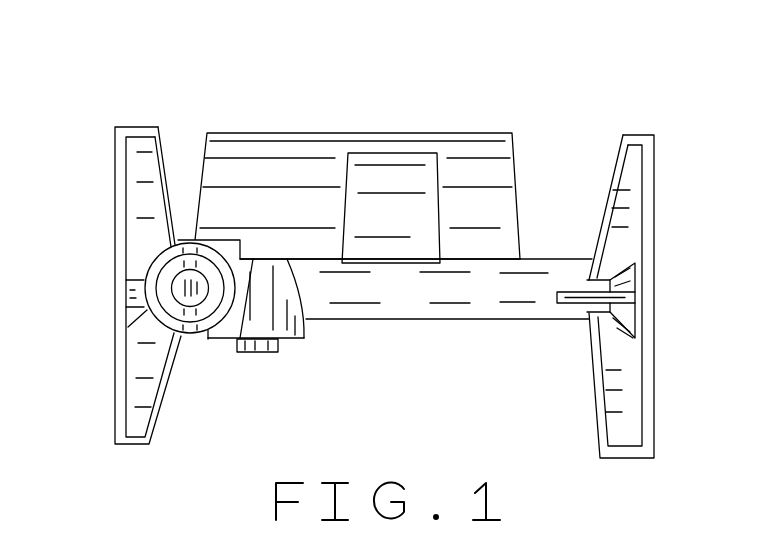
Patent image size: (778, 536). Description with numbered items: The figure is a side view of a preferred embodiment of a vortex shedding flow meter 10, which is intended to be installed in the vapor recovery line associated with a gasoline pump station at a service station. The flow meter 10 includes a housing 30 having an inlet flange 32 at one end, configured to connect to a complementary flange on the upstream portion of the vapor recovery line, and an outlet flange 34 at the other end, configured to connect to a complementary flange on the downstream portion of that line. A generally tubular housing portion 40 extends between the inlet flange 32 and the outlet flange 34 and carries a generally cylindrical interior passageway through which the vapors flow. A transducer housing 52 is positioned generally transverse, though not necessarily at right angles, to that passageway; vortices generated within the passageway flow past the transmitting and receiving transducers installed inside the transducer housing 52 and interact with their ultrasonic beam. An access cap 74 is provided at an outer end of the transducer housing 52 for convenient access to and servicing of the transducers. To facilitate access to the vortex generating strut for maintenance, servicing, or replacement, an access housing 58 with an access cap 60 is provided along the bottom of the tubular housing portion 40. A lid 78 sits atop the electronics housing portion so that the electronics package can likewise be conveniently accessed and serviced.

The flow meter 10 is at (453, 86).
The housing 30 is at (540, 252).
The inlet flange 32 is at (655, 229).
The outlet flange 34 is at (115, 207).
The tubular housing portion 40 is at (530, 322).
The transducer housing 52 is at (189, 340).
The access housing 58 is at (308, 324).
The access cap 60 is at (251, 353).
The access cap 74 is at (189, 268).
The lid 78 is at (292, 131).